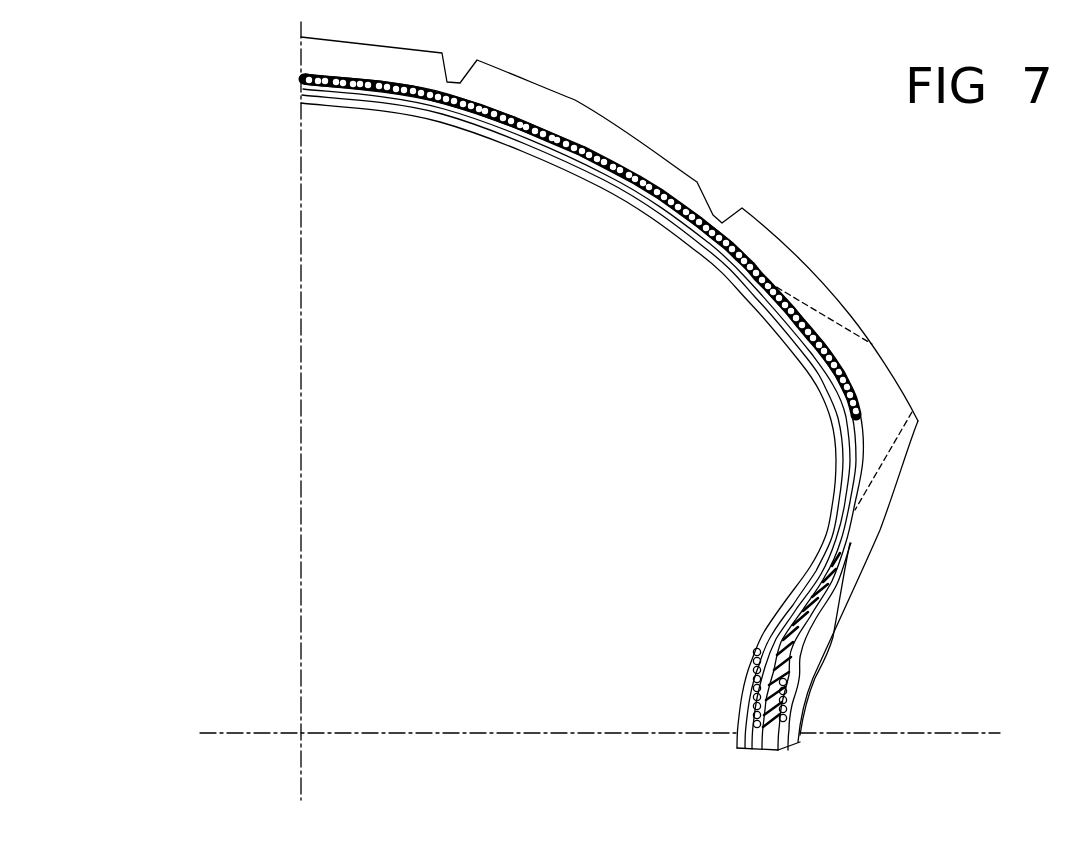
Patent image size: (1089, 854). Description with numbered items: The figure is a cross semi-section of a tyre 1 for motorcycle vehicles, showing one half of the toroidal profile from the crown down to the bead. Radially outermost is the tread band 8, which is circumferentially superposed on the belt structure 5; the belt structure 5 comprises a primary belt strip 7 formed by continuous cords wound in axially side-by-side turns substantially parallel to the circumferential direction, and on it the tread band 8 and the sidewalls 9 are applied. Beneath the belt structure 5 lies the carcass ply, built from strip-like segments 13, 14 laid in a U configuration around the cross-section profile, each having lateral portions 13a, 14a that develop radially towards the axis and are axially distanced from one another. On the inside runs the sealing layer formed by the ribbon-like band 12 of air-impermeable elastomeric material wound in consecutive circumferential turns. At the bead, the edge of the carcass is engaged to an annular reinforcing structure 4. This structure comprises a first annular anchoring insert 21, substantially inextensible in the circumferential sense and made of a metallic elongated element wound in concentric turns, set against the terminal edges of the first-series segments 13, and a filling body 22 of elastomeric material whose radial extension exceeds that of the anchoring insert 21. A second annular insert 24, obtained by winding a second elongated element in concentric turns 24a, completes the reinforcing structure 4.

The tyre 1 is at (968, 292).
The annular reinforcing structure 4 is at (781, 751).
The belt structure 5 is at (731, 237).
The primary belt strip 7 is at (824, 350).
The tread band 8 is at (698, 186).
The sidewalls 9 is at (821, 632).
The ribbon-like band 12 is at (773, 337).
The strip-like segment 13 is at (805, 568).
The lateral portion 13a is at (750, 682).
The strip-like segment 14 is at (858, 515).
The lateral portion 14a is at (795, 662).
The first annular anchoring insert 21 is at (757, 756).
The filling body 22 is at (788, 628).
The second annular insert 24 is at (795, 745).
The concentric turns 24a is at (790, 692).